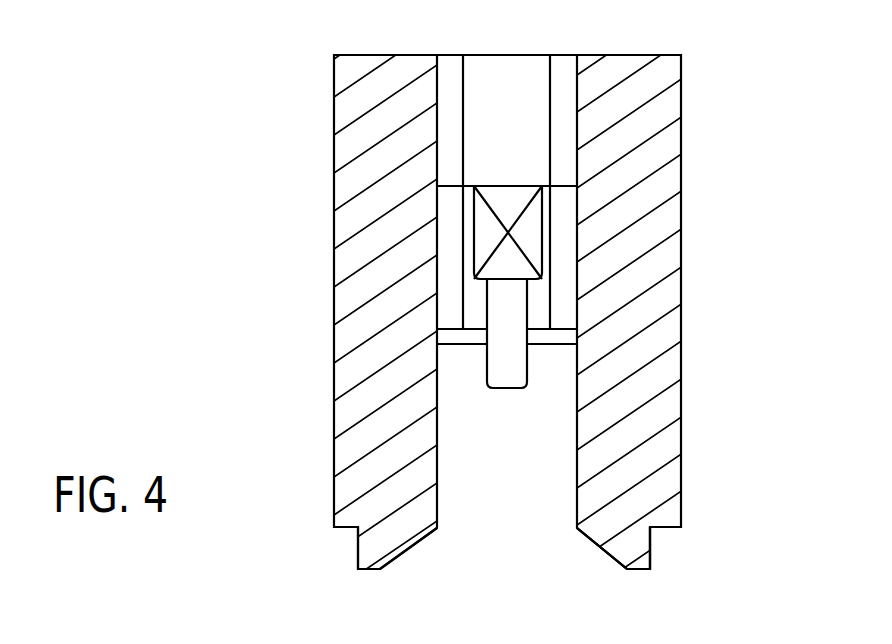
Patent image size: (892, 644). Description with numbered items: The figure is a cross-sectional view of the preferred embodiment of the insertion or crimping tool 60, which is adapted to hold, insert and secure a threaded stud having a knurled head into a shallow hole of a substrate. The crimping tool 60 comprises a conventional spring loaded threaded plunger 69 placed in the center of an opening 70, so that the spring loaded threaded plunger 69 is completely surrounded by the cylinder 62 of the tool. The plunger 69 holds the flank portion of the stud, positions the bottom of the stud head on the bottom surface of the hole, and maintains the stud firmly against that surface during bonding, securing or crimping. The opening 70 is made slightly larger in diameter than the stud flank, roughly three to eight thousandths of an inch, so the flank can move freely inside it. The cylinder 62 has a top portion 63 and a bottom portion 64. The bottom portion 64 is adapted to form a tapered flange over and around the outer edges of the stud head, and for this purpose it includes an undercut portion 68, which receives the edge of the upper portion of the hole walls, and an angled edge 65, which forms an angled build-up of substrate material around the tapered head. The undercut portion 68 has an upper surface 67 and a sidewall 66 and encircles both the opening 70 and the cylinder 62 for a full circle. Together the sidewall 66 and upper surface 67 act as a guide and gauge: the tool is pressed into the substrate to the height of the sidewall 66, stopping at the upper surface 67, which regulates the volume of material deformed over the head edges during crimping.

The crimping tool 60 is at (489, 322).
The cylinder 62 is at (333, 243).
The top portion 63 is at (648, 55).
The bottom portion 64 is at (648, 588).
The angled edge 65 is at (412, 552).
The sidewall 66 is at (356, 553).
The upper surface 67 is at (333, 527).
The undercut portion 68 is at (309, 557).
The spring loaded threaded plunger 69 is at (508, 183).
The opening 70 is at (516, 454).